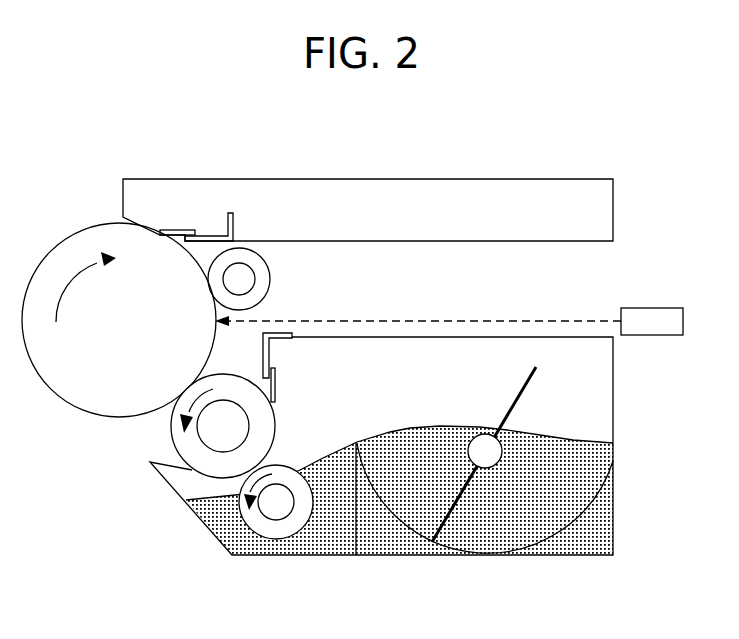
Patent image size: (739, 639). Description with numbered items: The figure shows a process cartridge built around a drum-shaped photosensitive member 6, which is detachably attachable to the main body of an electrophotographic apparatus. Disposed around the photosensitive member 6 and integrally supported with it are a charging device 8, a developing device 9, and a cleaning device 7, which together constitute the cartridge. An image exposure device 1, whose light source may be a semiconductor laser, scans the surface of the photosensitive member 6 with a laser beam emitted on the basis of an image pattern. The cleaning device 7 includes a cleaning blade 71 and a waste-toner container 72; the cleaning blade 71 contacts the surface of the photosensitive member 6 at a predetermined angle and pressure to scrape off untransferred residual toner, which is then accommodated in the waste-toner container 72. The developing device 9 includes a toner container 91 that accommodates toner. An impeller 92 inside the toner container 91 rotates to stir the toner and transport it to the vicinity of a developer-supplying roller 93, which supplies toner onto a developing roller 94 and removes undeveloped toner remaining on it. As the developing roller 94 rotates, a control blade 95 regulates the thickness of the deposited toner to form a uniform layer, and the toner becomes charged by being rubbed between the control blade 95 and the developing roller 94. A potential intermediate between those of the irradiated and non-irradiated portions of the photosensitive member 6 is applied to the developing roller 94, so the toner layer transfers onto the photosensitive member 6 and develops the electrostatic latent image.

The image exposure device 1 is at (650, 318).
The photosensitive member 6 is at (88, 402).
The cleaning device 7 is at (613, 198).
The cleaning blade 71 is at (182, 230).
The waste-toner container 72 is at (547, 190).
The charging device 8 is at (262, 280).
The developing device 9 is at (613, 370).
The toner container 91 is at (597, 423).
The impeller 92 is at (505, 412).
The developer-supplying roller 93 is at (285, 470).
The developing roller 94 is at (177, 433).
The control blade 95 is at (277, 383).